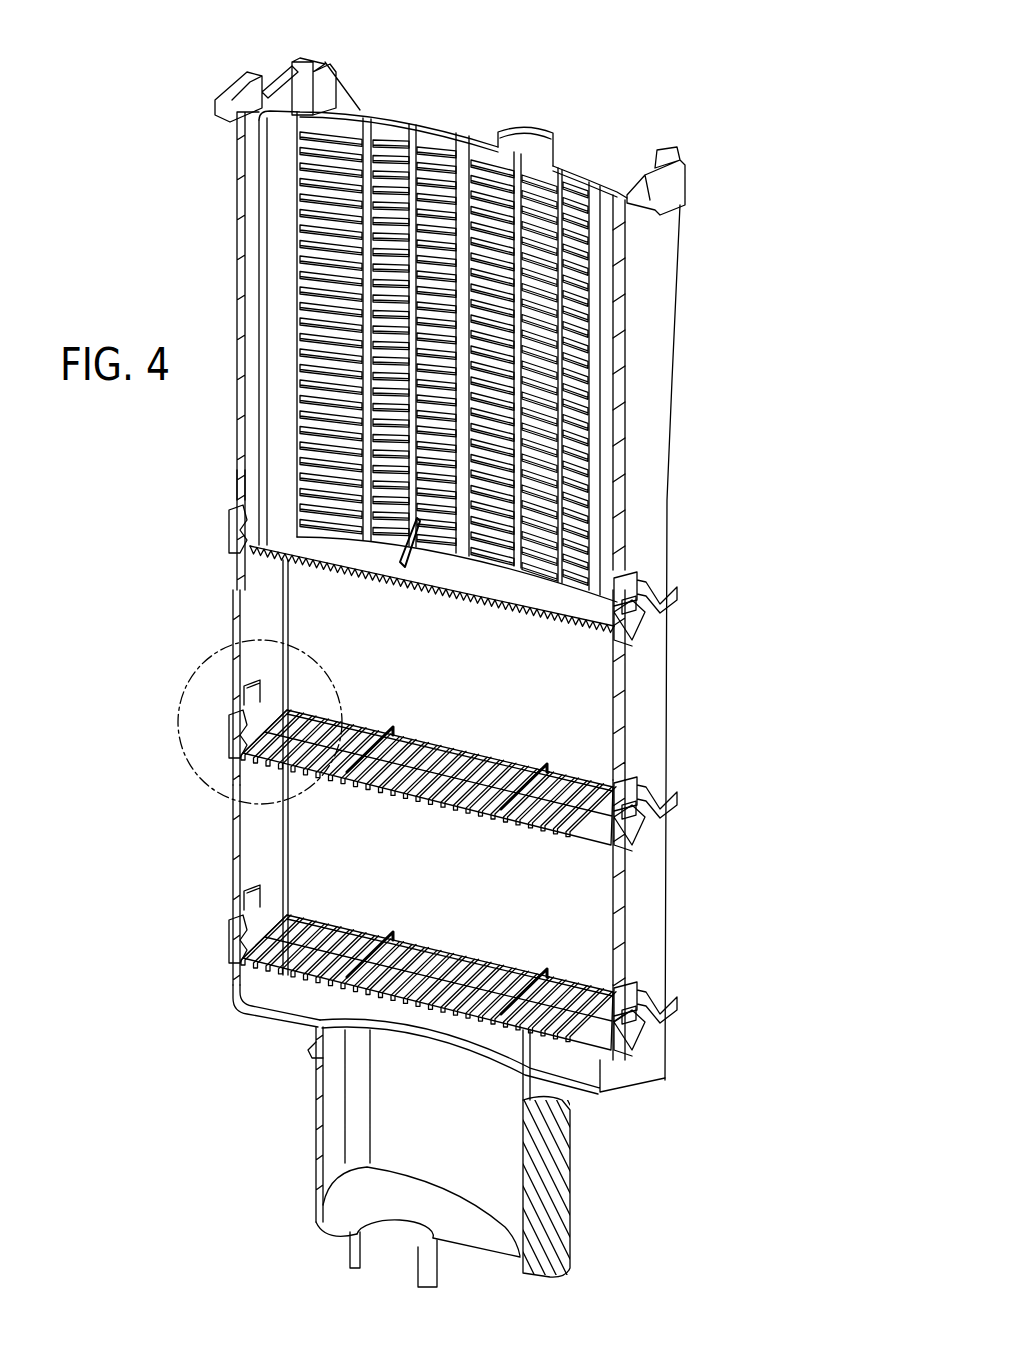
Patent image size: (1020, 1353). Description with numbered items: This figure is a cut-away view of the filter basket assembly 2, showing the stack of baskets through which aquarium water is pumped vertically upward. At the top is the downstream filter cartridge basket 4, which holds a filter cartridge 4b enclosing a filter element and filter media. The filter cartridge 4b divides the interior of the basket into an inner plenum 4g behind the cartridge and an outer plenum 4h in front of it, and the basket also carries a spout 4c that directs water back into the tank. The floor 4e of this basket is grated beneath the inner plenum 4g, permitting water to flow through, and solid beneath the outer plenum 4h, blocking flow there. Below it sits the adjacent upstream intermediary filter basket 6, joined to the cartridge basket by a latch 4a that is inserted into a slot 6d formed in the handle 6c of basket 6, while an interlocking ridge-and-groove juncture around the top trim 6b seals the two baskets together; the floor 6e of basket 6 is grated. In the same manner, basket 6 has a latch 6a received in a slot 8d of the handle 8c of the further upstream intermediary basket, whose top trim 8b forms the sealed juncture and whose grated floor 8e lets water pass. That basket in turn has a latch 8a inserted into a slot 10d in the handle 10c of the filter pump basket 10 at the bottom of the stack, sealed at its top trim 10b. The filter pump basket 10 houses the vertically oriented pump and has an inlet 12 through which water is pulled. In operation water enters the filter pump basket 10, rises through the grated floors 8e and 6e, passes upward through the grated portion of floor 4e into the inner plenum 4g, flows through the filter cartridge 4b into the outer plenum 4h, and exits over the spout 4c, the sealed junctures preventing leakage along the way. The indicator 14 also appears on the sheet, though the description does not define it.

The filter basket assembly 2 is at (194, 209).
The downstream filter cartridge basket 4 is at (240, 158).
The latch 4a is at (633, 607).
The filter cartridge 4b is at (582, 164).
The spout 4c is at (684, 207).
The floor of downstream filter cartridge basket 4e is at (258, 485).
The inner plenum 4g is at (250, 125).
The outer plenum 4h is at (303, 85).
The adjacent upstream intermediary filter basket 6 is at (233, 604).
The latch 6a is at (633, 812).
The top trim 6b is at (232, 548).
The handle 6c is at (640, 590).
The slot 6d is at (636, 615).
The grated floor 6e is at (424, 760).
The latch 8a is at (633, 1020).
The top trim 8b is at (232, 753).
The handle 8c is at (640, 797).
The slot 8d is at (636, 820).
The grated floor 8e is at (425, 965).
The filter pump basket 10 is at (318, 1112).
The top trim 10b is at (232, 960).
The handle 10c is at (640, 1000).
The slot 10d is at (637, 1030).
The inlet 12 is at (352, 1268).
The frame stack 14 is at (204, 711).